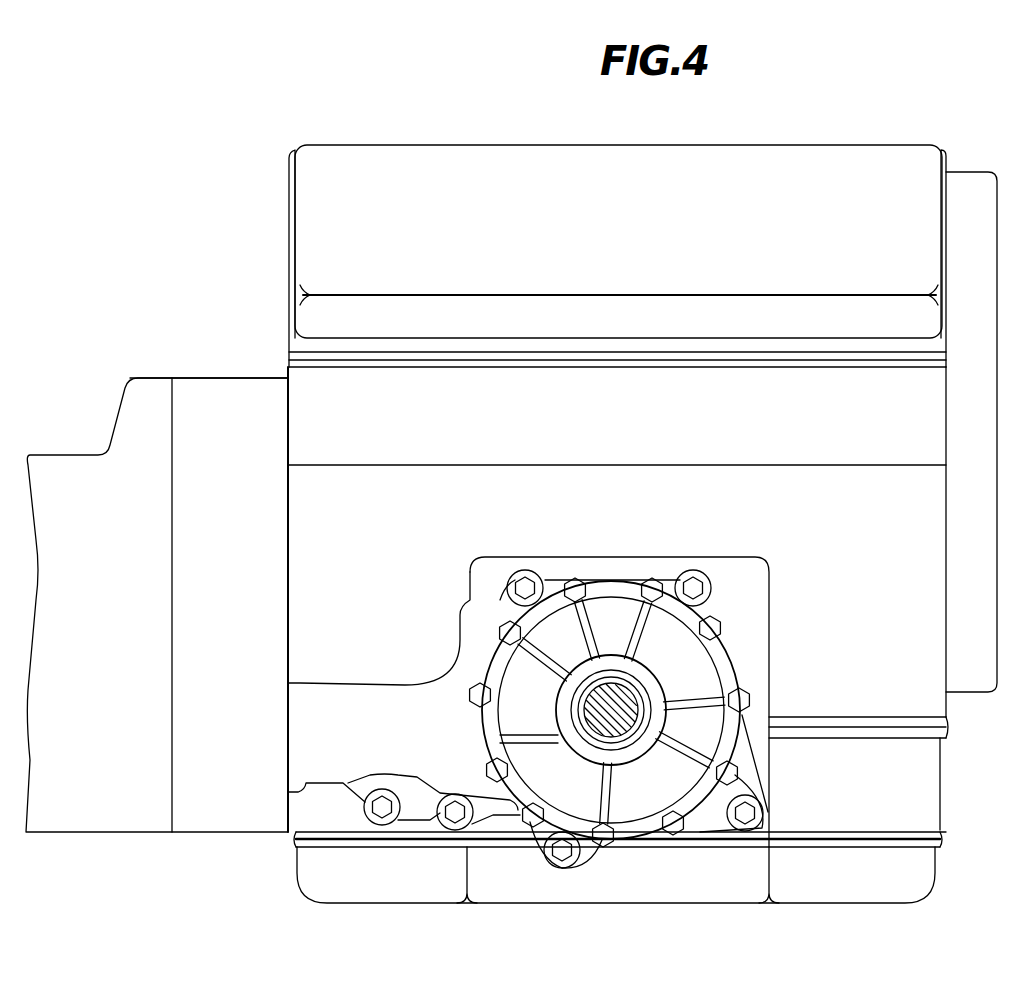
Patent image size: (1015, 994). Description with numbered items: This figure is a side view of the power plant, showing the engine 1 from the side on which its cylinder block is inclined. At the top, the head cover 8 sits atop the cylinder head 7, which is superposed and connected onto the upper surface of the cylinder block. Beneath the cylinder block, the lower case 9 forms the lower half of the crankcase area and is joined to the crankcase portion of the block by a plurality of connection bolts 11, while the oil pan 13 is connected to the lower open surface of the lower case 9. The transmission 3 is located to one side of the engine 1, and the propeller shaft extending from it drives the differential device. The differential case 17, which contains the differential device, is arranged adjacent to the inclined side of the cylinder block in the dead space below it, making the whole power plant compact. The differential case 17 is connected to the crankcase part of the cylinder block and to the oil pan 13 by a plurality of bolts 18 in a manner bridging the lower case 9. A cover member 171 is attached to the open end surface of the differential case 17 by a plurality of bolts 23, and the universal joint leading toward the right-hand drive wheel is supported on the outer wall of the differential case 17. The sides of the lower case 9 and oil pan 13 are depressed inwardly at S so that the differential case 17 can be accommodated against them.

The engine 1 is at (932, 590).
The transmission 3 is at (86, 828).
The cylinder head 7 is at (932, 401).
The head cover 8 is at (722, 156).
The lower case 9 is at (928, 779).
The connection bolts 11 is at (636, 700).
The oil pan 13 is at (918, 879).
The differential case 17 is at (728, 655).
The cover member 171 is at (718, 742).
The bolts 18 is at (526, 578).
The bolts 23 is at (640, 579).
The inward depression S is at (755, 591).